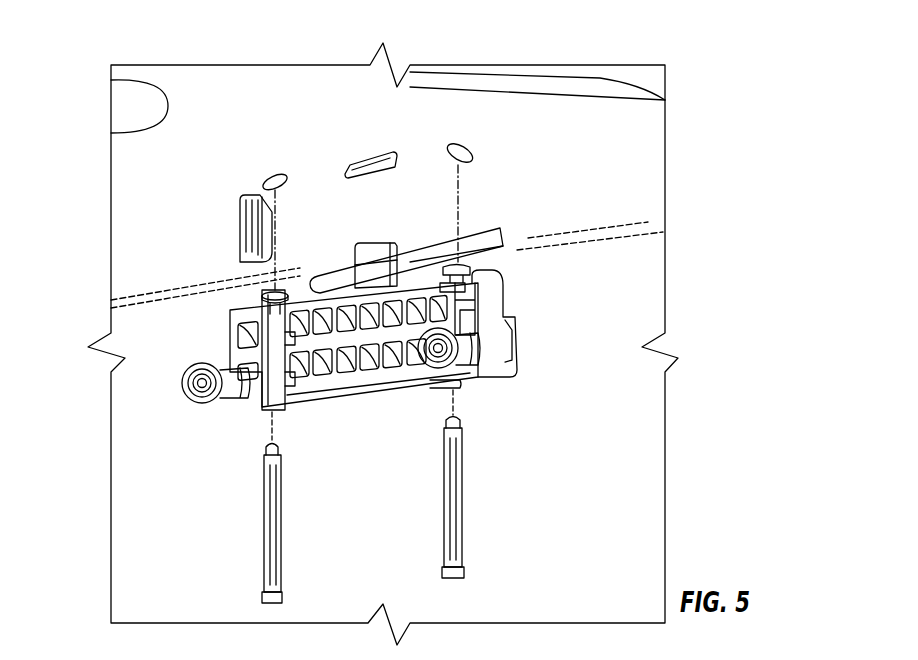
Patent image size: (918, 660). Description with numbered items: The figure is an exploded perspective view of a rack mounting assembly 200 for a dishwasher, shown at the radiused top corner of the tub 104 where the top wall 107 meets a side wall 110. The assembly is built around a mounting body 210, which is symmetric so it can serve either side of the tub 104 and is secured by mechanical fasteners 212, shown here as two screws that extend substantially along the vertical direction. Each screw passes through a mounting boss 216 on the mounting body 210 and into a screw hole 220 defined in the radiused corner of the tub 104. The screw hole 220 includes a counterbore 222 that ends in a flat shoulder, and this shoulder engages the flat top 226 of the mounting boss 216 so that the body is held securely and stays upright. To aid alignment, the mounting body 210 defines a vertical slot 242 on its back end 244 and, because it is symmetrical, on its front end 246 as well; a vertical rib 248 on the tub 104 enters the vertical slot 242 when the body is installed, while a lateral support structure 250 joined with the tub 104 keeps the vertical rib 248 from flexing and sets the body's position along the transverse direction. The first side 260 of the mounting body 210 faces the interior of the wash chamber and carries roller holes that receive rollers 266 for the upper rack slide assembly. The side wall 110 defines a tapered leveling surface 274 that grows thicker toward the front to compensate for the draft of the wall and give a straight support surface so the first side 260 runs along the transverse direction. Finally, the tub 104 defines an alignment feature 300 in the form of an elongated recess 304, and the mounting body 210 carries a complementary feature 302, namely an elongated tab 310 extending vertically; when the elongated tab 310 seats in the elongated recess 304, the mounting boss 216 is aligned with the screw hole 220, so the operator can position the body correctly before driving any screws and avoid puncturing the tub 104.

The tub 104 is at (123, 458).
The top wall 107 is at (132, 138).
The side wall 110 is at (590, 598).
The rack mounting assembly 200 is at (434, 402).
The mounting body 210 is at (343, 377).
The mechanical fastener 212 is at (453, 538).
The mounting boss 216 is at (463, 255).
The screw hole 220 is at (455, 146).
The counterbore 222 is at (468, 157).
The flat top 226 is at (278, 290).
The vertical slot 242 is at (522, 333).
The back end 244 is at (225, 347).
The front end 246 is at (502, 287).
The vertical rib 248 is at (240, 222).
The lateral support structure 250 is at (280, 273).
The first side 260 is at (264, 387).
The roller 266 is at (465, 373).
The tapered leveling surface 274 is at (418, 238).
The alignment feature 300 is at (358, 160).
The complementary feature 302 is at (356, 243).
The elongated recess 304 is at (385, 162).
The elongated tab 310 is at (423, 252).